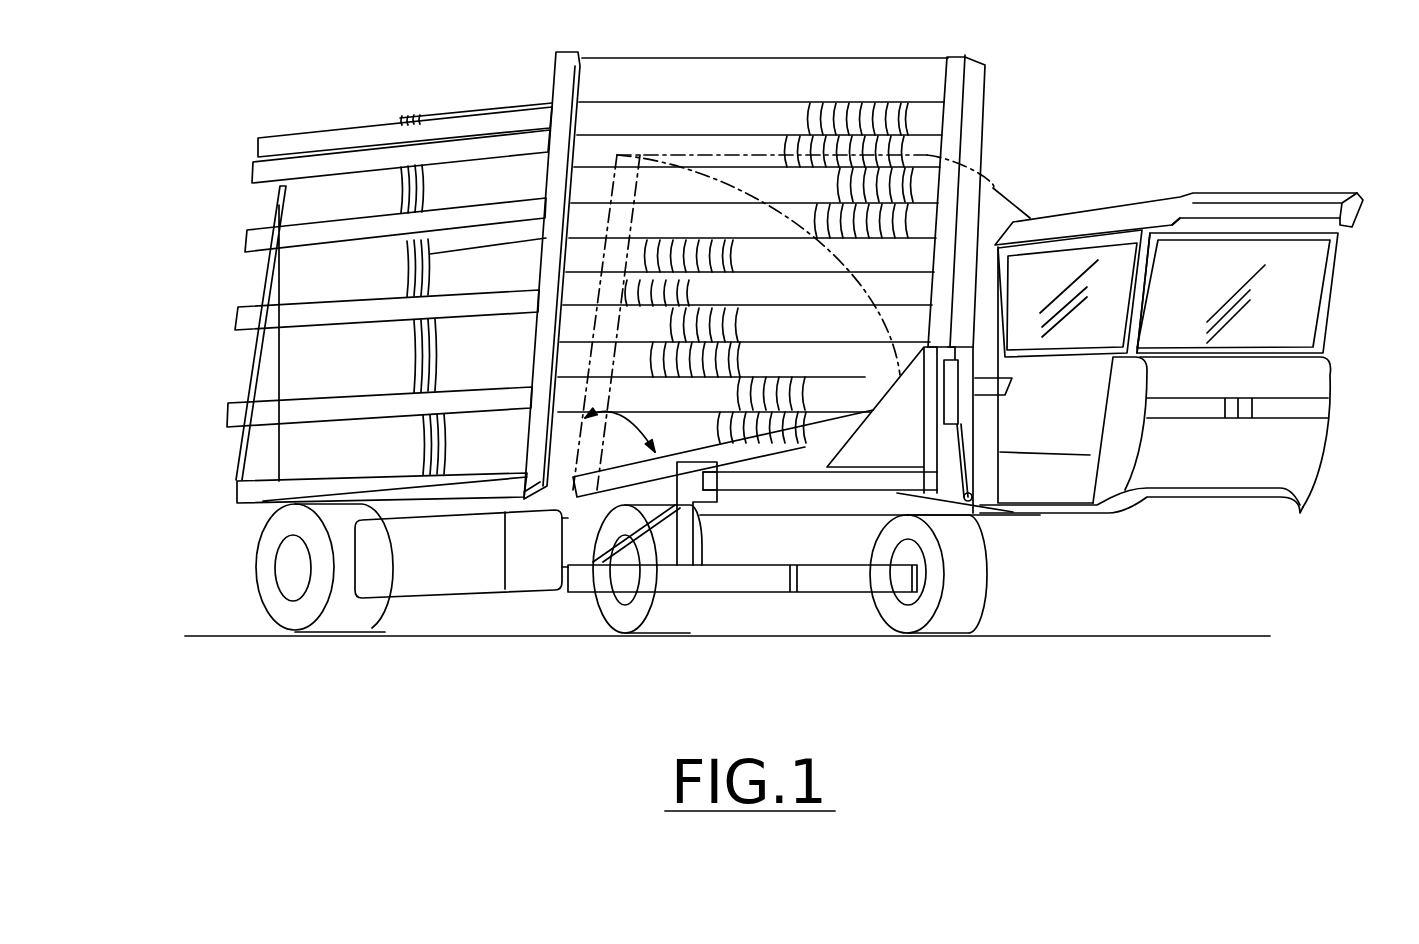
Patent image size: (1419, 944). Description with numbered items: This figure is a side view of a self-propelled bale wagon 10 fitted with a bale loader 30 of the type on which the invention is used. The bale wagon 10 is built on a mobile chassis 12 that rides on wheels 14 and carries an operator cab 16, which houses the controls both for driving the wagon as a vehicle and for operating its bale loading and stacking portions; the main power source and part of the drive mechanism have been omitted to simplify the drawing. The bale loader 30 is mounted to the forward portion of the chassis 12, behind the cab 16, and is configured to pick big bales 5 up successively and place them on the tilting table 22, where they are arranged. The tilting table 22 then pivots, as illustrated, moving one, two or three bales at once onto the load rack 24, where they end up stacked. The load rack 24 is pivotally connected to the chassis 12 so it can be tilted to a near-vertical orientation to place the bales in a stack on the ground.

The big bales 5 is at (673, 120).
The bale wagon 10 is at (1047, 93).
The mobile chassis 12 is at (583, 505).
The wheels 14 is at (347, 613).
The operator cab 16 is at (1270, 200).
The tilting table 22 is at (632, 490).
The load rack 24 is at (315, 472).
The bale loader 30 is at (837, 486).